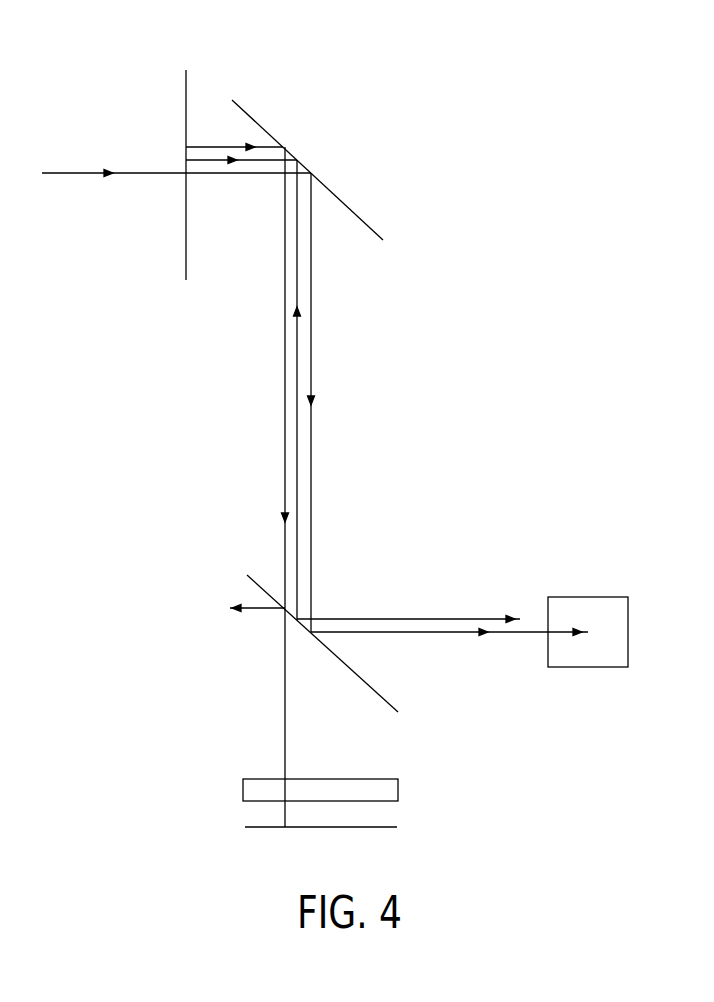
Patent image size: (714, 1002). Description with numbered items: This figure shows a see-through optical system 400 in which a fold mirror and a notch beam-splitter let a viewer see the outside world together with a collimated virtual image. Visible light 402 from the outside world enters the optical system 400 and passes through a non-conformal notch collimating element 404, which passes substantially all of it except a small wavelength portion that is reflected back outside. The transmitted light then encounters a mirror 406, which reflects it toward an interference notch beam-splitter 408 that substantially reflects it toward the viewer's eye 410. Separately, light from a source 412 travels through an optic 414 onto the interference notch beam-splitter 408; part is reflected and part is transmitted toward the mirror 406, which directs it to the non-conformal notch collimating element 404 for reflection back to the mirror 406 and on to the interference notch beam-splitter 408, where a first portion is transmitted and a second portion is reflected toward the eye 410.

The optical system 400 is at (440, 443).
The visible light 402 is at (176, 162).
The non-conformal notch collimating element 404 is at (187, 70).
The mirror 406 is at (357, 215).
The interference notch beam-splitter 408 is at (258, 585).
The eye 410 is at (594, 607).
The source 412 is at (390, 826).
The optic 414 is at (243, 792).